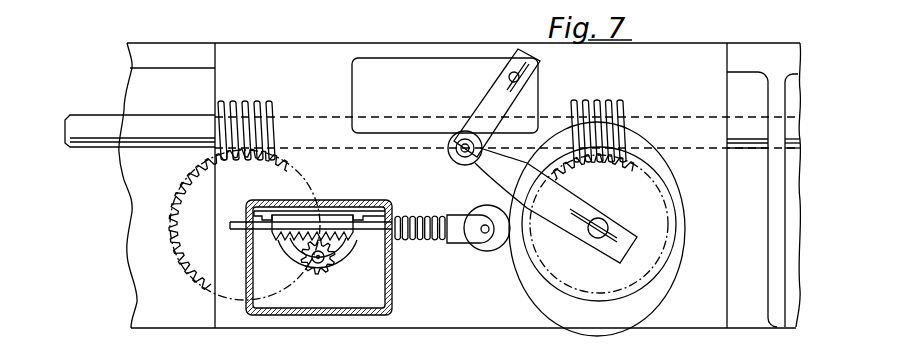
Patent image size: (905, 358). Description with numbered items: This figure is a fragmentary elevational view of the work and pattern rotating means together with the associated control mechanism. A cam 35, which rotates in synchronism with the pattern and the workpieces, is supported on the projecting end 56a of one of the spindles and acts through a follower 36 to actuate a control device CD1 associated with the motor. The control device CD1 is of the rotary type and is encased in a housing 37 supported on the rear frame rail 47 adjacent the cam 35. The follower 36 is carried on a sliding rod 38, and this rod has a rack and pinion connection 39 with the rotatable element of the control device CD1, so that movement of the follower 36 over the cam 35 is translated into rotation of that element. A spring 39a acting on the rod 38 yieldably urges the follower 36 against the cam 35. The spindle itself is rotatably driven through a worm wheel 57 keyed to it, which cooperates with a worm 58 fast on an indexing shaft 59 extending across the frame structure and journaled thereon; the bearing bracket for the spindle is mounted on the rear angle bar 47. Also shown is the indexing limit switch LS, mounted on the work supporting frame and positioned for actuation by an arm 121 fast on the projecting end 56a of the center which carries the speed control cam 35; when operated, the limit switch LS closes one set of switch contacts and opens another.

The cam 35 is at (618, 331).
The follower 36 is at (489, 253).
The housing 37 is at (393, 295).
The sliding rod 38 is at (387, 208).
The rack and pinion connection 39 is at (341, 250).
The spring 39a is at (444, 240).
The rear frame rail 47 is at (140, 238).
The projecting end of spindle 56a is at (592, 232).
The worm wheel 57 is at (183, 191).
The worm 58 is at (258, 108).
The indexing shaft 59 is at (85, 123).
The arm 121 is at (500, 183).
The indexing limit switch LS is at (418, 60).
The control device CD1 is at (356, 323).